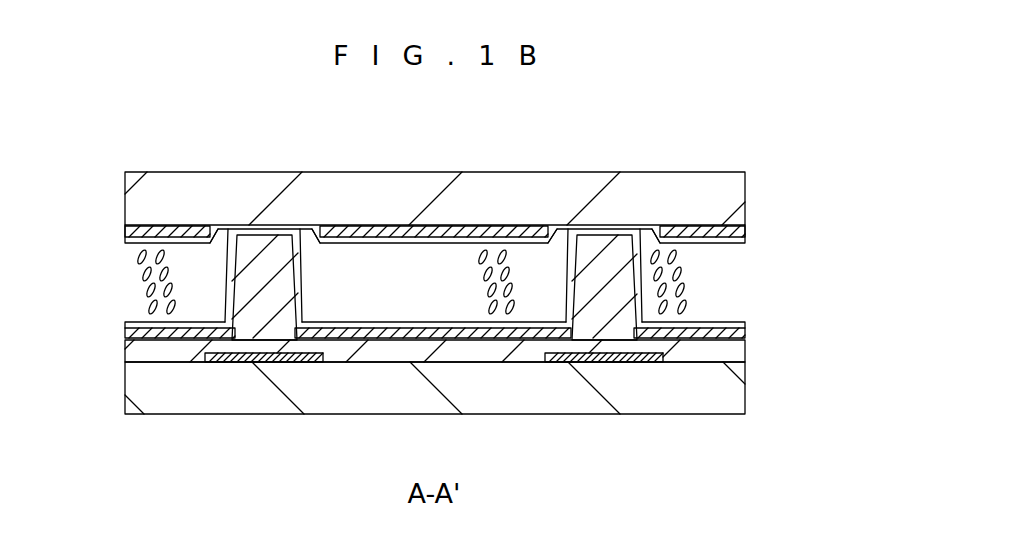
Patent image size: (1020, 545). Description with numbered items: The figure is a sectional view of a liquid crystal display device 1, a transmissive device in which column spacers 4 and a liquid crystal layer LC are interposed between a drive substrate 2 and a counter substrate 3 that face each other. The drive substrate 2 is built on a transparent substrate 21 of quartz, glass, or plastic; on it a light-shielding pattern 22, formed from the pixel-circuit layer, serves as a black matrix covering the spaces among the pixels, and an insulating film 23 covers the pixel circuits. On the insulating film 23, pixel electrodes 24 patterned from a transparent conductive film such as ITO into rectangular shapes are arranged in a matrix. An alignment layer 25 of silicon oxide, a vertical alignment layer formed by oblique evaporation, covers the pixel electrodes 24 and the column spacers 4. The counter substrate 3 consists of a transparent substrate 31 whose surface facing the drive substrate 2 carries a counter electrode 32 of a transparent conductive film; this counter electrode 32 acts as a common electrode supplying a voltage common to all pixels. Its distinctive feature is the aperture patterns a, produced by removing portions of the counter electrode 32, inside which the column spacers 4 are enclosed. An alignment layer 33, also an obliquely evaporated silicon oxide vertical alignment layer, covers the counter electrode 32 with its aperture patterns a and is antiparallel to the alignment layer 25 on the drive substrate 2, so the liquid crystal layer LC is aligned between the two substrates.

The liquid crystal display device 1 is at (116, 135).
The drive substrate 2 is at (134, 421).
The counter substrate 3 is at (125, 187).
The column spacer 4 is at (247, 250).
The aperture pattern a is at (317, 225).
The transparent substrate 21 is at (181, 400).
The light-shielding pattern 22 is at (310, 363).
The insulating film 23 is at (133, 355).
The pixel electrode 24 is at (140, 333).
The alignment layer 25 is at (710, 328).
The transparent substrate 31 is at (160, 172).
The counter electrode 32 is at (398, 232).
The alignment layer 33 is at (712, 243).
The liquid crystal layer LC is at (707, 282).